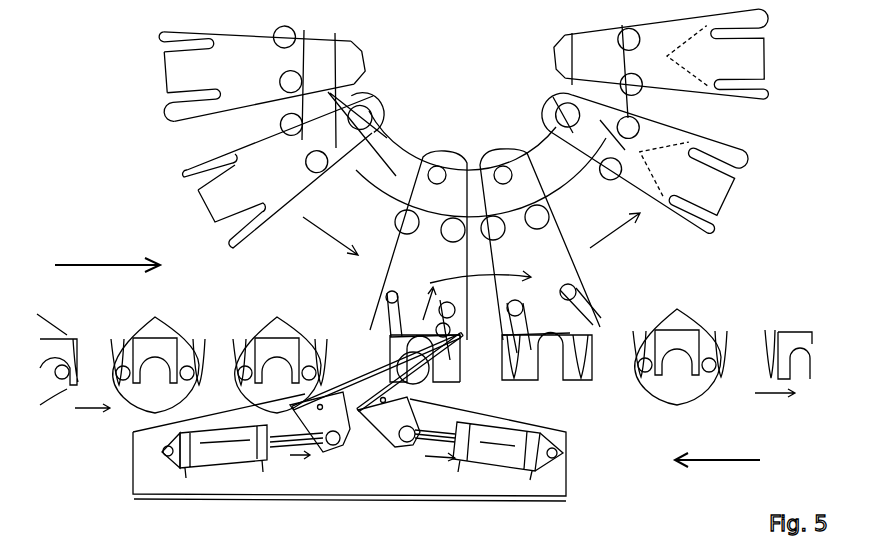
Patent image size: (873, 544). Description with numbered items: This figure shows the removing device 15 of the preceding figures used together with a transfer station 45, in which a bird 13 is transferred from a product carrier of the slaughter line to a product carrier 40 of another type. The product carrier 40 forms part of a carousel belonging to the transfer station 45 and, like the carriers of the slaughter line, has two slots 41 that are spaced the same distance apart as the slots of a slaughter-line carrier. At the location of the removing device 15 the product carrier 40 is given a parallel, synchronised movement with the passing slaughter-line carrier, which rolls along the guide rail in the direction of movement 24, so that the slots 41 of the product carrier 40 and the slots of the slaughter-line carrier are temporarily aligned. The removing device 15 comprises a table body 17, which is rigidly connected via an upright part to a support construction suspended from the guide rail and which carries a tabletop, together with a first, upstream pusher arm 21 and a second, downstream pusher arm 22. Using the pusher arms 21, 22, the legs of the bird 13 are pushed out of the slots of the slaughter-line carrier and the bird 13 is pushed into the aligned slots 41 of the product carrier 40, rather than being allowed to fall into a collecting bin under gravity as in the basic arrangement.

The transfer station 45 is at (482, 64).
The product carrier 40 is at (167, 81).
The slots 41 is at (172, 47).
The direction of movement 24 is at (90, 264).
The bird 13 is at (278, 322).
The first, upstream pusher arm 21 is at (363, 373).
The second, downstream pusher arm 22 is at (421, 366).
The table body 17 is at (107, 457).
The removing device 15 is at (735, 462).